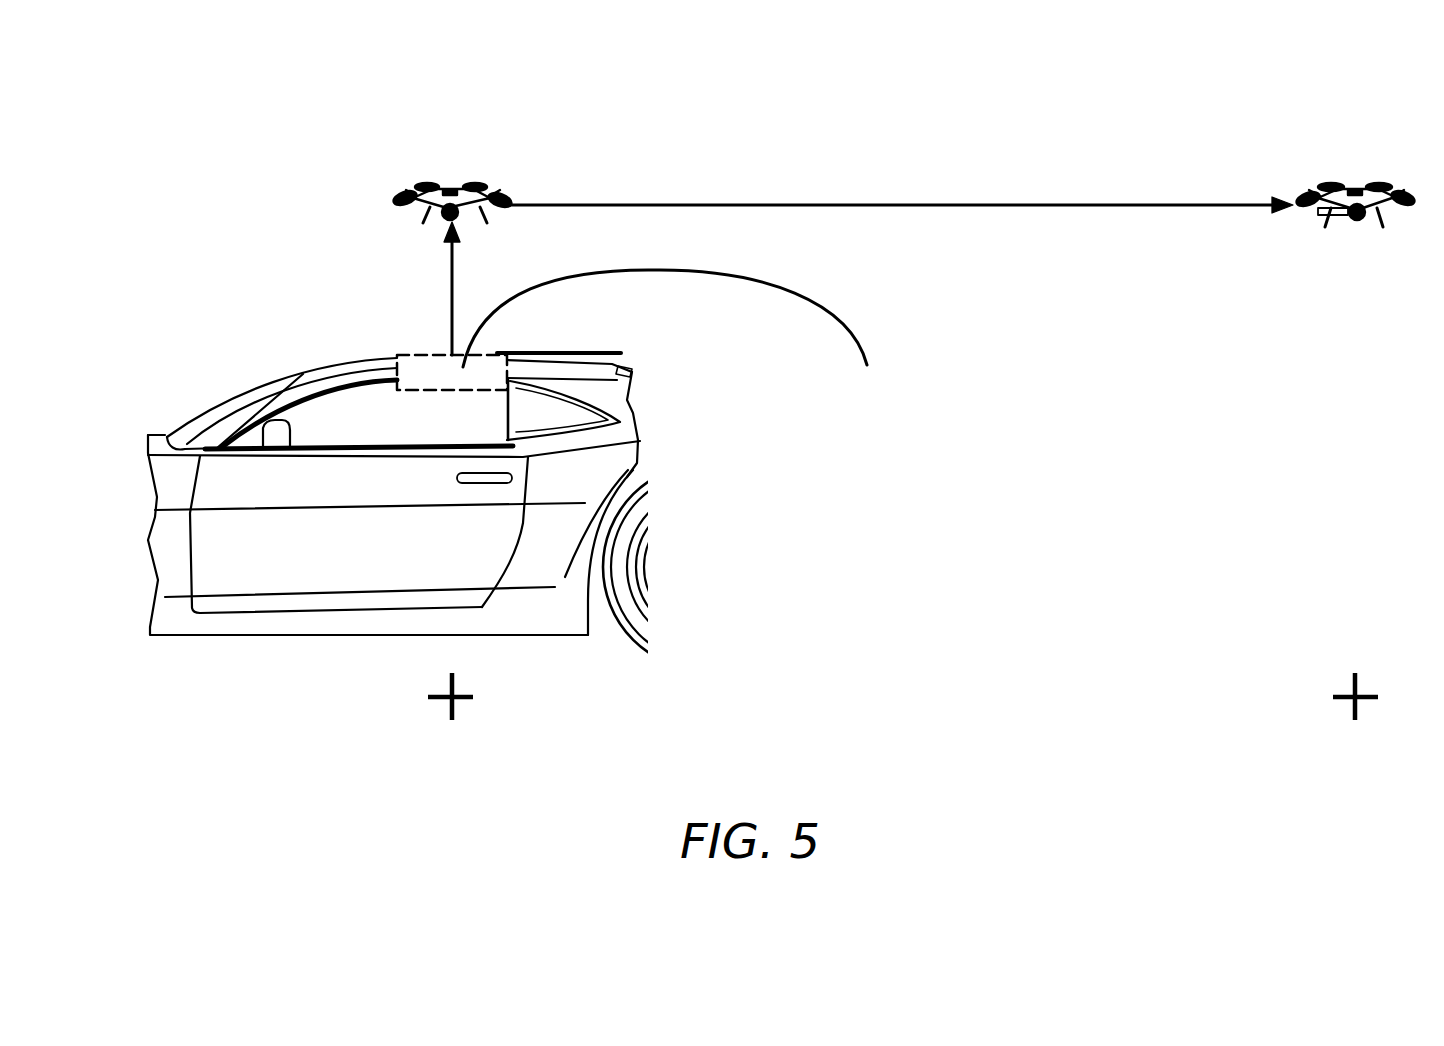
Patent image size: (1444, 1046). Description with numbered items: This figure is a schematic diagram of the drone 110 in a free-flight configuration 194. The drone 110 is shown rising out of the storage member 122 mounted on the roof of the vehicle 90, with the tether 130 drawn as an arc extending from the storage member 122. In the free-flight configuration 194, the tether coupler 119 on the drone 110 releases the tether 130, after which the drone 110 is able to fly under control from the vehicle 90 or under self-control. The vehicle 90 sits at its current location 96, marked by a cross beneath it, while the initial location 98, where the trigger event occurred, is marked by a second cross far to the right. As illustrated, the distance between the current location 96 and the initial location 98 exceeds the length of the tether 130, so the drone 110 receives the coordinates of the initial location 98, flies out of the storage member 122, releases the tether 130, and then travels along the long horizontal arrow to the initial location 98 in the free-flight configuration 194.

The vehicle 90 is at (207, 560).
The current location 96 is at (453, 692).
The initial location 98 is at (1360, 692).
The drone 110 is at (450, 183).
The tether coupler 119 is at (1325, 214).
The storage member 122 is at (418, 354).
The tether 130 is at (773, 281).
The free-flight configuration 194 is at (884, 133).